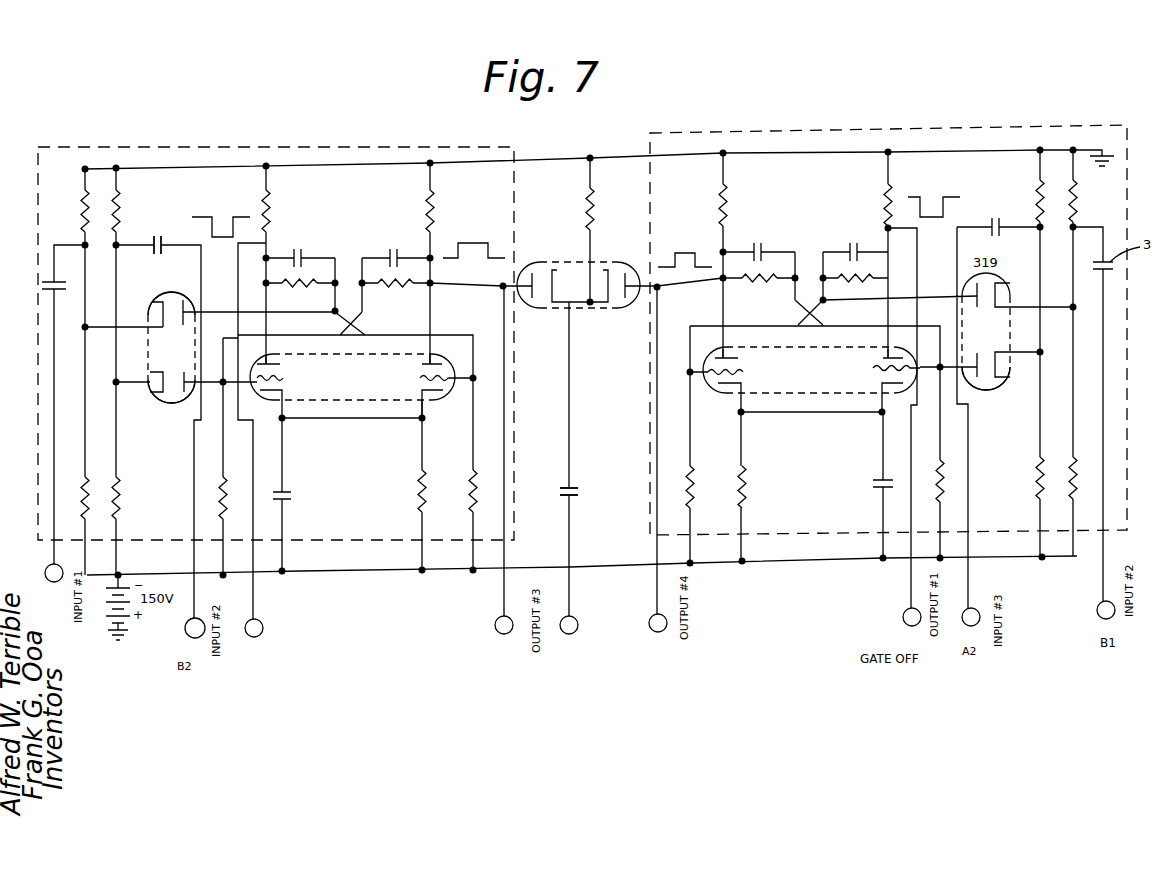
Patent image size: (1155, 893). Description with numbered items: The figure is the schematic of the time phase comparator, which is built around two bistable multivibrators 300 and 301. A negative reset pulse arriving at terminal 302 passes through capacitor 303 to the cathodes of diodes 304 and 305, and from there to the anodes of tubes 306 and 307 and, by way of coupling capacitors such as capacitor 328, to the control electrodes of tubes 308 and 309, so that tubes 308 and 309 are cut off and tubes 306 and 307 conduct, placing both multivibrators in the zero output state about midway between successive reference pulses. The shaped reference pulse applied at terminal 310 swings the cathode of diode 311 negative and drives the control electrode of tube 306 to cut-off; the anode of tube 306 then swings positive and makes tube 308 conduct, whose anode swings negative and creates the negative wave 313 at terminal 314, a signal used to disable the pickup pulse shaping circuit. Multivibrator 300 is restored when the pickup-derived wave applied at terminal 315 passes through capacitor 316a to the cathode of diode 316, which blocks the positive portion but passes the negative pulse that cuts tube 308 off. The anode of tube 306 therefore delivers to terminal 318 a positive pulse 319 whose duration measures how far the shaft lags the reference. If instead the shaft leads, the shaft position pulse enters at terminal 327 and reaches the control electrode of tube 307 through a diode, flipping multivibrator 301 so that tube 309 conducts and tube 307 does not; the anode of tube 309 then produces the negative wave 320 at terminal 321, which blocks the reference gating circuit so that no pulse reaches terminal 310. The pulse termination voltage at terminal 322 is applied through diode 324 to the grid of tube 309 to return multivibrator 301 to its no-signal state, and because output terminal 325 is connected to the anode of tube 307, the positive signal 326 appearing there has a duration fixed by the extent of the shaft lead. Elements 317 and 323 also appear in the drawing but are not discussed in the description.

The bistable multivibrator 300 is at (322, 543).
The bistable multivibrator 301 is at (805, 535).
The terminal 302 is at (572, 638).
The capacitor 303 is at (583, 497).
The diode 304 is at (532, 278).
The diode 305 is at (626, 278).
The tube 306 is at (441, 354).
The tube 307 is at (715, 349).
The tube 308 is at (261, 354).
The tube 309 is at (899, 344).
The terminal 310 is at (52, 566).
The diode 311 is at (171, 301).
The negative wave 313 is at (240, 212).
The terminal 314 is at (260, 636).
The terminal 315 is at (186, 638).
The diode 316 is at (171, 396).
The capacitor 316a is at (158, 427).
The coupling capacitor 317 is at (396, 251).
The terminal 318 is at (510, 633).
The positive pulse 319 is at (492, 237).
The negative voltage wave 320 is at (902, 228).
The terminal 321 is at (904, 618).
The terminal 322 is at (979, 624).
The coupling capacitor 323 is at (998, 219).
The diode 324 is at (1001, 382).
The terminal 325 is at (652, 631).
The signal 326 is at (685, 251).
The terminal 327 is at (1098, 614).
The capacitor 328 is at (759, 242).